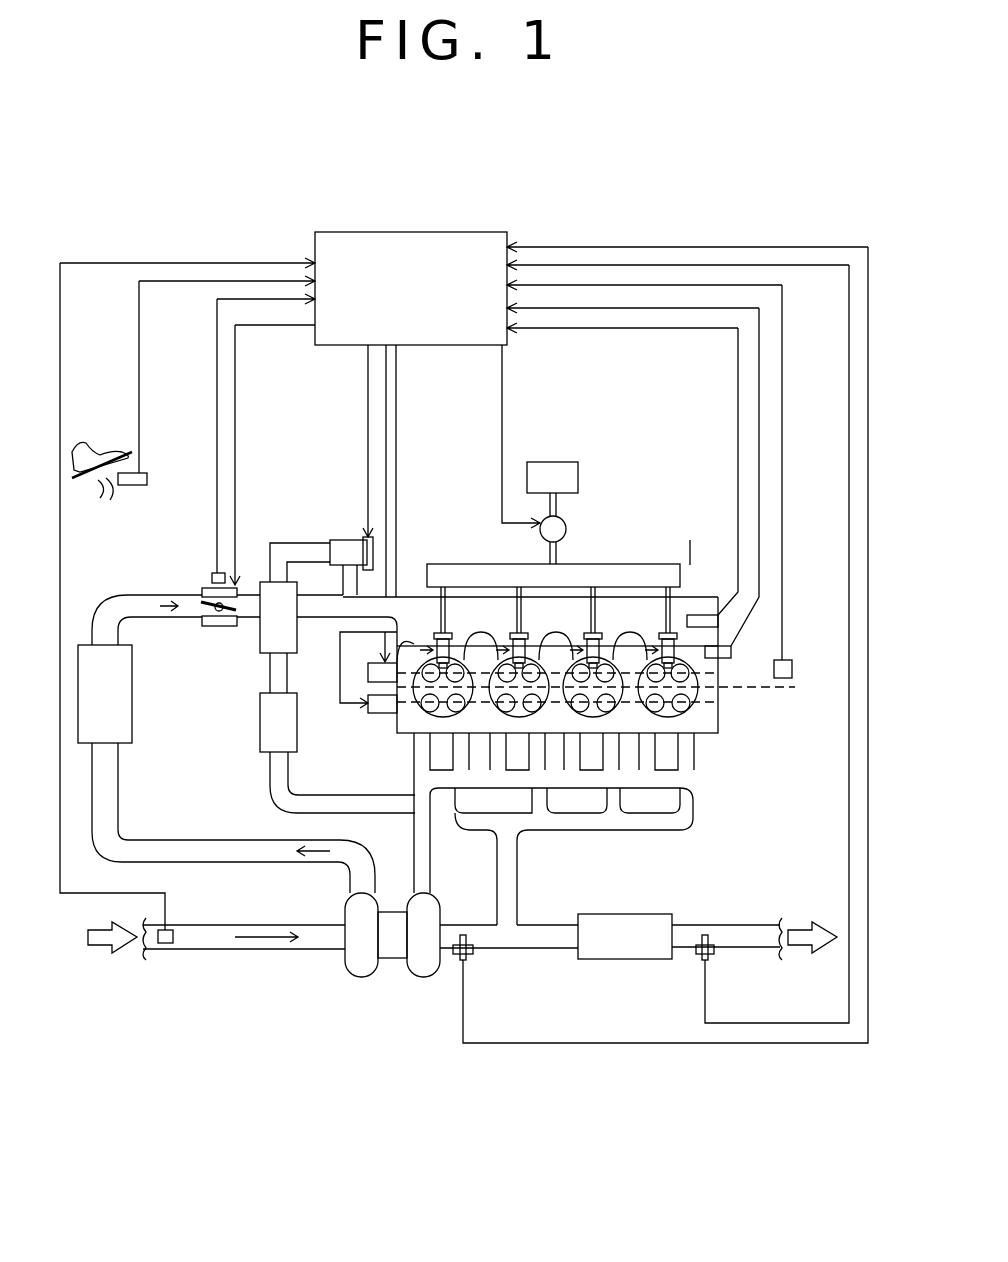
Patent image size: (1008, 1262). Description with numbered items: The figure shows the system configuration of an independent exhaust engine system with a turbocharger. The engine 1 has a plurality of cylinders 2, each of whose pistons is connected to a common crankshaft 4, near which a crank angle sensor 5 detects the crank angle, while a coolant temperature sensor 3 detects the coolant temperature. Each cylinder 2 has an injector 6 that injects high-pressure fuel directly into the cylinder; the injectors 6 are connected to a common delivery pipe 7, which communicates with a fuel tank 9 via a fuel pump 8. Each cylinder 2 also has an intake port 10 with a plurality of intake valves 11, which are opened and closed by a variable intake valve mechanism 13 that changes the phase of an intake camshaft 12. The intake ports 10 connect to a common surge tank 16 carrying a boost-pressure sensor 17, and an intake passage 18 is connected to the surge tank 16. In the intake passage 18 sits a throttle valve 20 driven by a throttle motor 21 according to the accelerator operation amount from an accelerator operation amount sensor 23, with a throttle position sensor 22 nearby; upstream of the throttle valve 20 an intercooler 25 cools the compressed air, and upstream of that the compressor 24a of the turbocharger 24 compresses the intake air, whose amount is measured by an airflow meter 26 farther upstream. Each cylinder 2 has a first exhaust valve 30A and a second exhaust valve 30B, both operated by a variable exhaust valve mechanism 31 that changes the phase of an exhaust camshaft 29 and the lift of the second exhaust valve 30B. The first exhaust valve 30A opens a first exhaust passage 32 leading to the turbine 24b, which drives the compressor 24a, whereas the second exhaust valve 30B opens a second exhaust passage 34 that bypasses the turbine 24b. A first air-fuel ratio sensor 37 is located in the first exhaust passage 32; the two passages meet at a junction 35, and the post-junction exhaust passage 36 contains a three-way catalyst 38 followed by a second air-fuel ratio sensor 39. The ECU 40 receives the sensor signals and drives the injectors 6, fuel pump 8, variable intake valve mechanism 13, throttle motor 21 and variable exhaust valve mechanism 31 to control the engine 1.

The engine 1 is at (732, 727).
The cylinder 2 is at (700, 687).
The coolant temperature sensor 3 is at (726, 660).
The crankshaft 4 is at (767, 687).
The crank angle sensor 5 is at (792, 658).
The injector 6 is at (602, 632).
The delivery pipe 7 is at (653, 564).
The fuel pump 8 is at (565, 521).
The fuel tank 9 is at (578, 480).
The intake port 10 is at (467, 637).
The intake valve 11 is at (457, 660).
The intake camshaft 12 is at (553, 647).
The variable intake valve mechanism 13 is at (368, 674).
The surge tank 16 is at (690, 536).
The boost-pressure sensor 17 is at (703, 615).
The intake passage 18 is at (378, 578).
The throttle valve 20 is at (208, 612).
The throttle motor 21 is at (205, 588).
The throttle position sensor 22 is at (212, 572).
The accelerator operation amount sensor 23 is at (131, 487).
The turbocharger 24 is at (387, 994).
The compressor 24a is at (362, 978).
The turbine 24b is at (418, 978).
The intercooler 25 is at (128, 745).
The airflow meter 26 is at (165, 945).
The exhaust camshaft 29 is at (483, 735).
The first exhaust valve 30A is at (398, 732).
The second exhaust valve 30B is at (682, 712).
The variable exhaust valve mechanism 31 is at (378, 716).
The first exhaust passage 32 is at (412, 745).
The second exhaust passage 34 is at (700, 825).
The junction 35 is at (495, 922).
The post-junction exhaust passage 36 is at (540, 923).
The first air-fuel ratio sensor 37 is at (467, 962).
The three-way catalyst 38 is at (614, 960).
The second air-fuel ratio sensor 39 is at (698, 962).
The ECU 40 is at (397, 232).